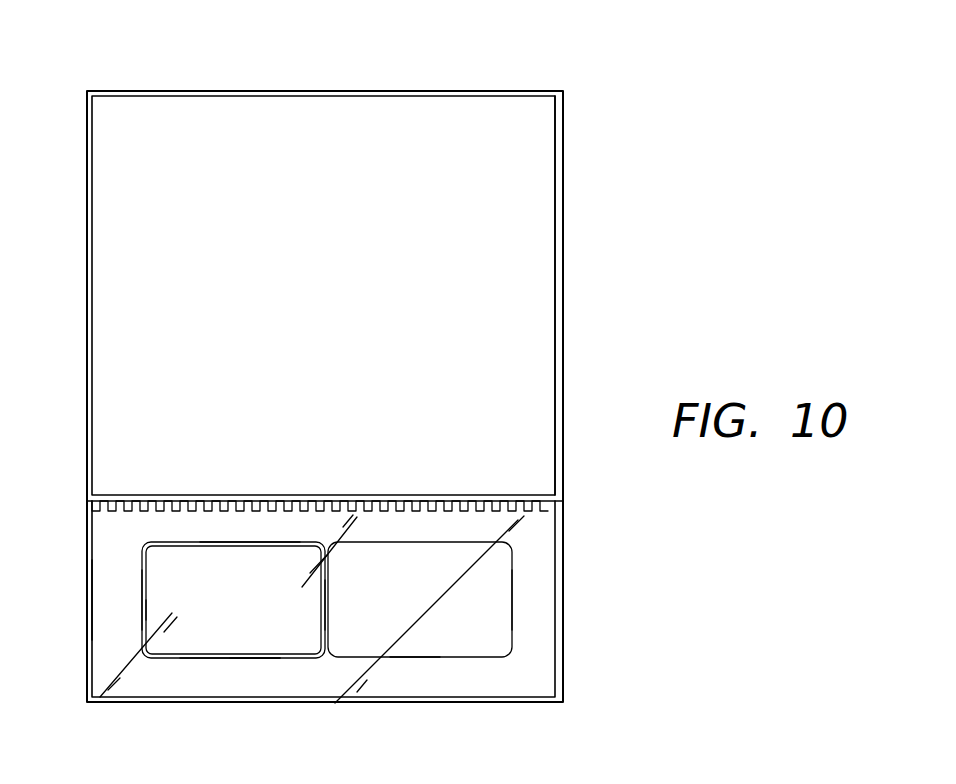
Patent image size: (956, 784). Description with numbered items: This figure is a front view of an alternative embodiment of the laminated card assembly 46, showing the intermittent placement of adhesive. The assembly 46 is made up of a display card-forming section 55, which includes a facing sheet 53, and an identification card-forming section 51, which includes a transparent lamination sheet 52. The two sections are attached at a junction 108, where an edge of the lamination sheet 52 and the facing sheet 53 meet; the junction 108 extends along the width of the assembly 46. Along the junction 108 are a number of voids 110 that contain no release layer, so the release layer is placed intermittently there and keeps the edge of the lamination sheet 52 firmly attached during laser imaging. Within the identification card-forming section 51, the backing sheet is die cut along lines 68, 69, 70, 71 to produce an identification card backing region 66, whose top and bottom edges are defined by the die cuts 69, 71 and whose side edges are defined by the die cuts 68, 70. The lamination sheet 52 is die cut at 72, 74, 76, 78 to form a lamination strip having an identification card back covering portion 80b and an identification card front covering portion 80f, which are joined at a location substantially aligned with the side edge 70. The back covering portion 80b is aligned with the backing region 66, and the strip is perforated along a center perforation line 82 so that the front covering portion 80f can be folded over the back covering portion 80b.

The laminated card assembly 46 is at (323, 77).
The facing sheet 53 is at (125, 255).
The display card-forming section 55 is at (583, 318).
The junction 108 is at (87, 500).
The voids 110 is at (553, 508).
The identification card-forming section 51 is at (578, 593).
The transparent lamination sheet 52 is at (102, 588).
The die cut 72 is at (138, 624).
The identification card backing region 66 is at (180, 562).
The die cut 68 is at (145, 605).
The die cut 69 is at (237, 547).
The die cut 70 is at (322, 622).
The die cut 71 is at (208, 652).
The die cut line 74 is at (255, 545).
The perforation line 82 is at (330, 600).
The die cut 76 is at (510, 600).
The die cut line 78 is at (268, 660).
The identification card back covering portion 80b is at (167, 655).
The identification card front covering portion 80f is at (365, 650).